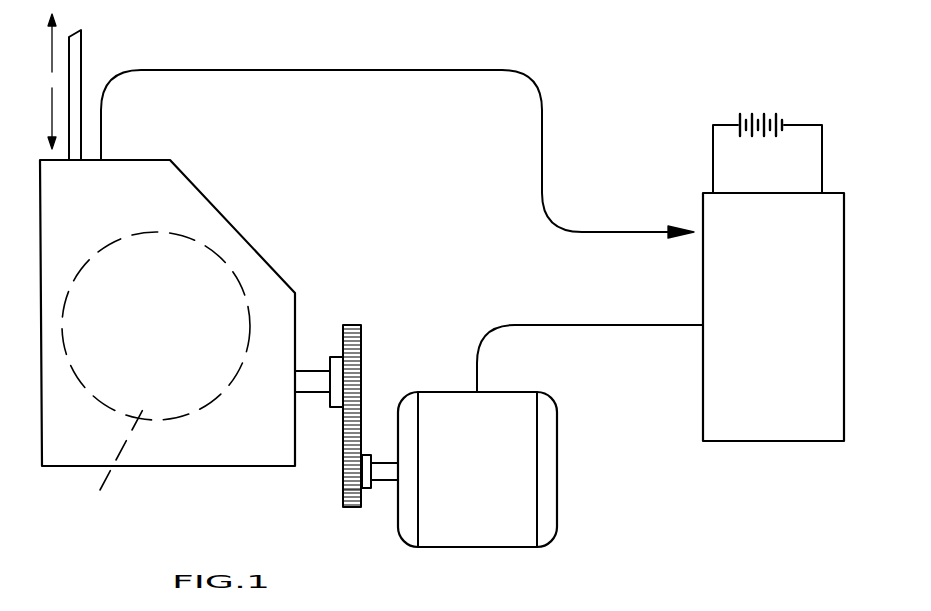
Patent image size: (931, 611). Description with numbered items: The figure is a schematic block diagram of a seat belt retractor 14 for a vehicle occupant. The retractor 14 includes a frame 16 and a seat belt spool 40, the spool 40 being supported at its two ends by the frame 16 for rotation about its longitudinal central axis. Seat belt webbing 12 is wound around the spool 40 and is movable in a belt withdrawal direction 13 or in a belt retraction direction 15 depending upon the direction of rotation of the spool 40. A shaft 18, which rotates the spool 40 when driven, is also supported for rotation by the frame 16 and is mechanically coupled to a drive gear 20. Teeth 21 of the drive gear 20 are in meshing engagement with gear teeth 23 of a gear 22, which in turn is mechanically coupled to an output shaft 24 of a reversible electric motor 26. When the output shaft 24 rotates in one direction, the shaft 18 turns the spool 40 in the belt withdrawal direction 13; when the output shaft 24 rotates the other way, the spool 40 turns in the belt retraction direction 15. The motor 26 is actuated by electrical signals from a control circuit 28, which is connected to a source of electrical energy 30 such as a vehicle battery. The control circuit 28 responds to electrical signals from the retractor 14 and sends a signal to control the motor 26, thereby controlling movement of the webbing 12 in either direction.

The seat belt webbing 12 is at (75, 67).
The belt withdrawal direction 13 is at (42, 43).
The seat belt retractor 14 is at (243, 201).
The belt retraction direction 15 is at (42, 118).
The frame 16 is at (217, 423).
The shaft 18 is at (313, 380).
The drive gear 20 is at (353, 322).
The teeth 21 is at (361, 375).
The gear 22 is at (357, 508).
The gear teeth 23 is at (346, 473).
The output shaft 24 is at (384, 472).
The reversible electric motor 26 is at (498, 515).
The control circuit 28 is at (735, 390).
The source of electrical energy 30 is at (762, 108).
The seat belt spool 40 is at (116, 458).